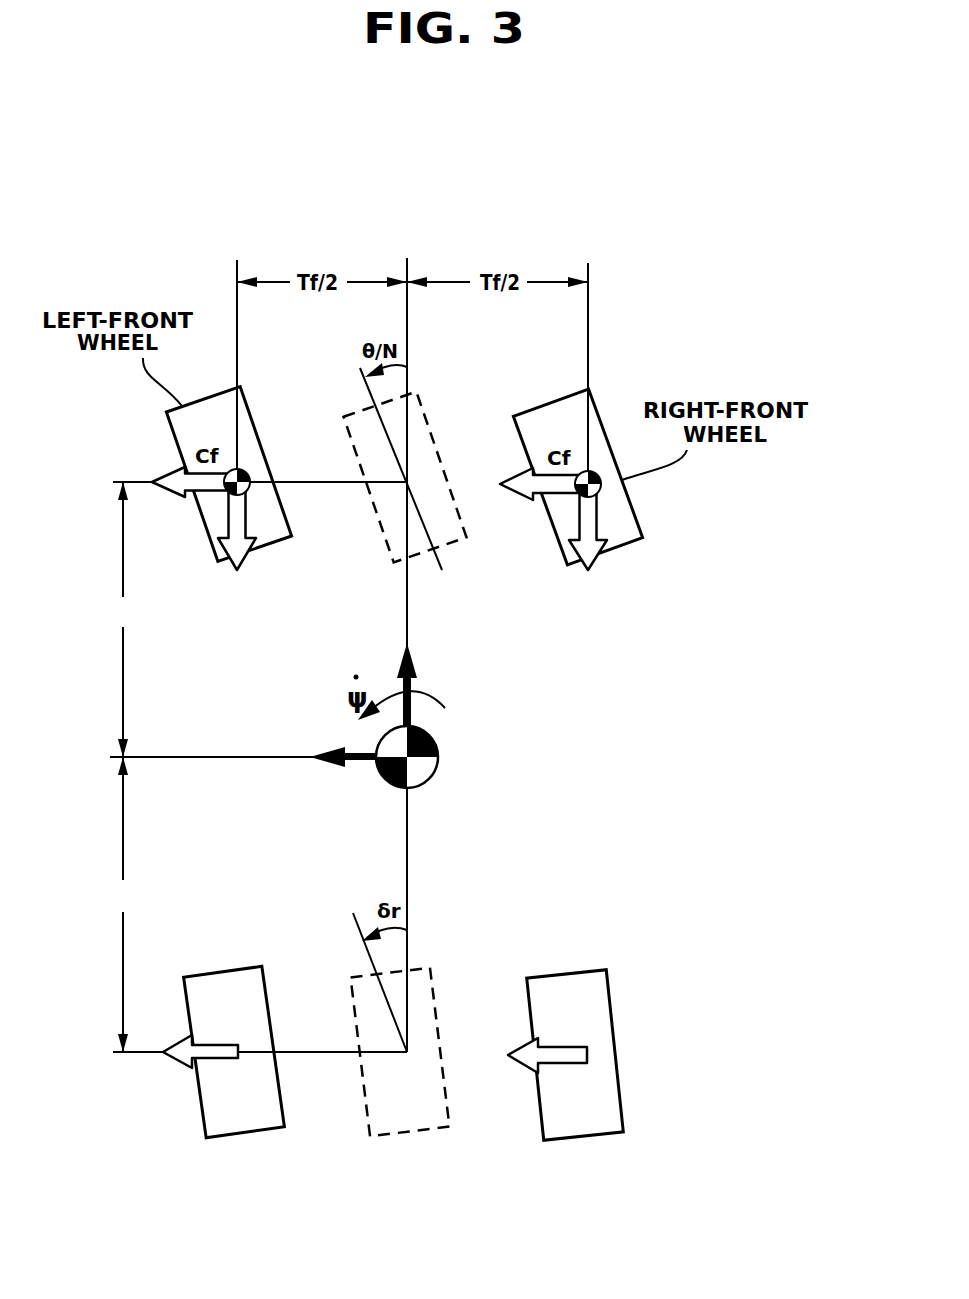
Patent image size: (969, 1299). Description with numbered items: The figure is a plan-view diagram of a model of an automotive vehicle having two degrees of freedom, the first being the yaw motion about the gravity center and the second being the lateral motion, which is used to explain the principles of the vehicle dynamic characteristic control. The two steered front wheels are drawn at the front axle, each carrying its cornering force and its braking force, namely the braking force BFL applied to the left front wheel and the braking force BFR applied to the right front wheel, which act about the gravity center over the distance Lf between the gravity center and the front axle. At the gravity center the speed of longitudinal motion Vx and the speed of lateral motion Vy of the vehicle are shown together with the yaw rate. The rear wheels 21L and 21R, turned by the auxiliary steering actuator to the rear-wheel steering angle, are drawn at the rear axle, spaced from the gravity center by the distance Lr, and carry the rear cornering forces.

The left rear wheel 21L is at (266, 1132).
The right rear wheel 21R is at (608, 1137).
The braking force applied to the left front wheel BFL is at (238, 539).
The braking force applied to the right front wheel BFR is at (590, 542).
The speed of longitudinal motion of the vehicle Vx is at (425, 686).
The speed of lateral motion of the vehicle Vy is at (336, 745).
The distance between the gravity center of the vehicle and the front axle Lf is at (127, 619).
The distance between the vehicle gravity center and the rear axle Lr is at (125, 904).